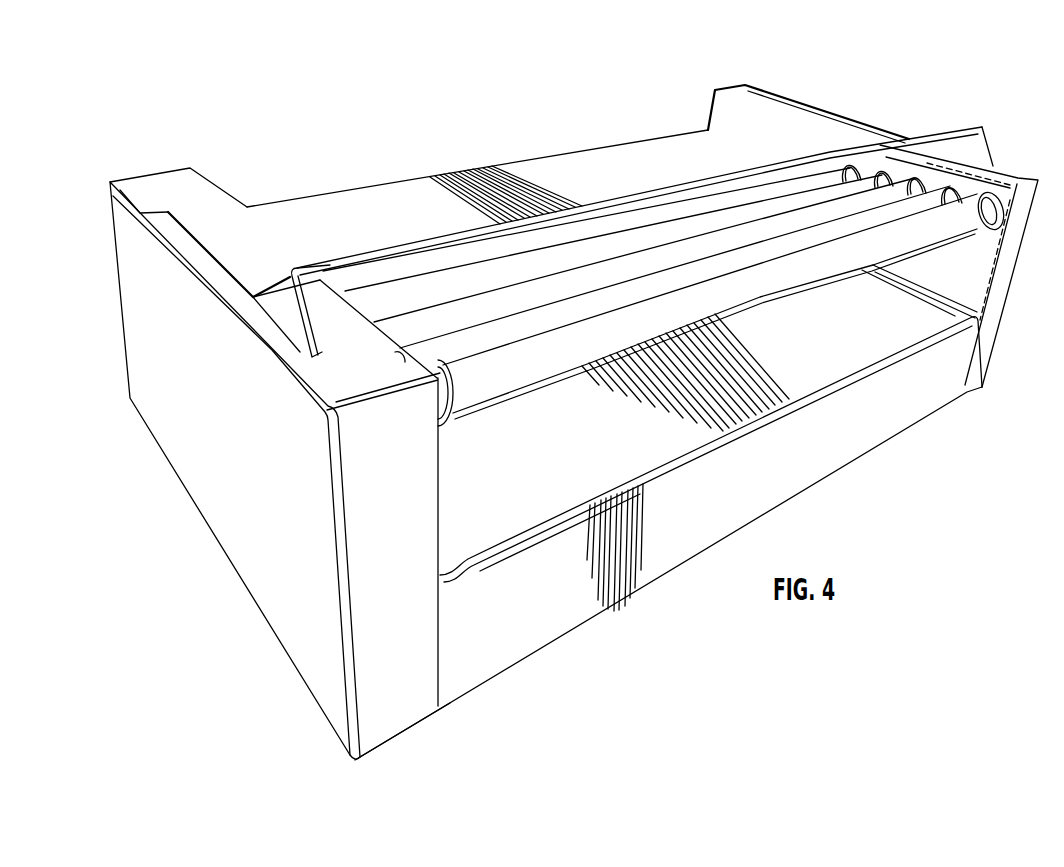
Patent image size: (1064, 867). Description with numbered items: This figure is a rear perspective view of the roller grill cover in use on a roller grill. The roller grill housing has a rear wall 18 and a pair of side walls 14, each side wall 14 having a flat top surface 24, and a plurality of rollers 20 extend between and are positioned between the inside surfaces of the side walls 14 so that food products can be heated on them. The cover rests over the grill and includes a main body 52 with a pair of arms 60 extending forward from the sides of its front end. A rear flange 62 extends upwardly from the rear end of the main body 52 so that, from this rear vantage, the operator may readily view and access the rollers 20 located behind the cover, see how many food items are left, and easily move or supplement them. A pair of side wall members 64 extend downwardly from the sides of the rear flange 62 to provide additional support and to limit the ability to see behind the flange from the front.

The side walls 14 is at (240, 472).
The rear wall 18 is at (870, 427).
The rollers 20 is at (630, 270).
The flat top surface 24 is at (358, 357).
The main body 52 is at (400, 208).
The arms 60 is at (795, 108).
The rear flange 62 is at (717, 183).
The side wall members 64 is at (278, 300).